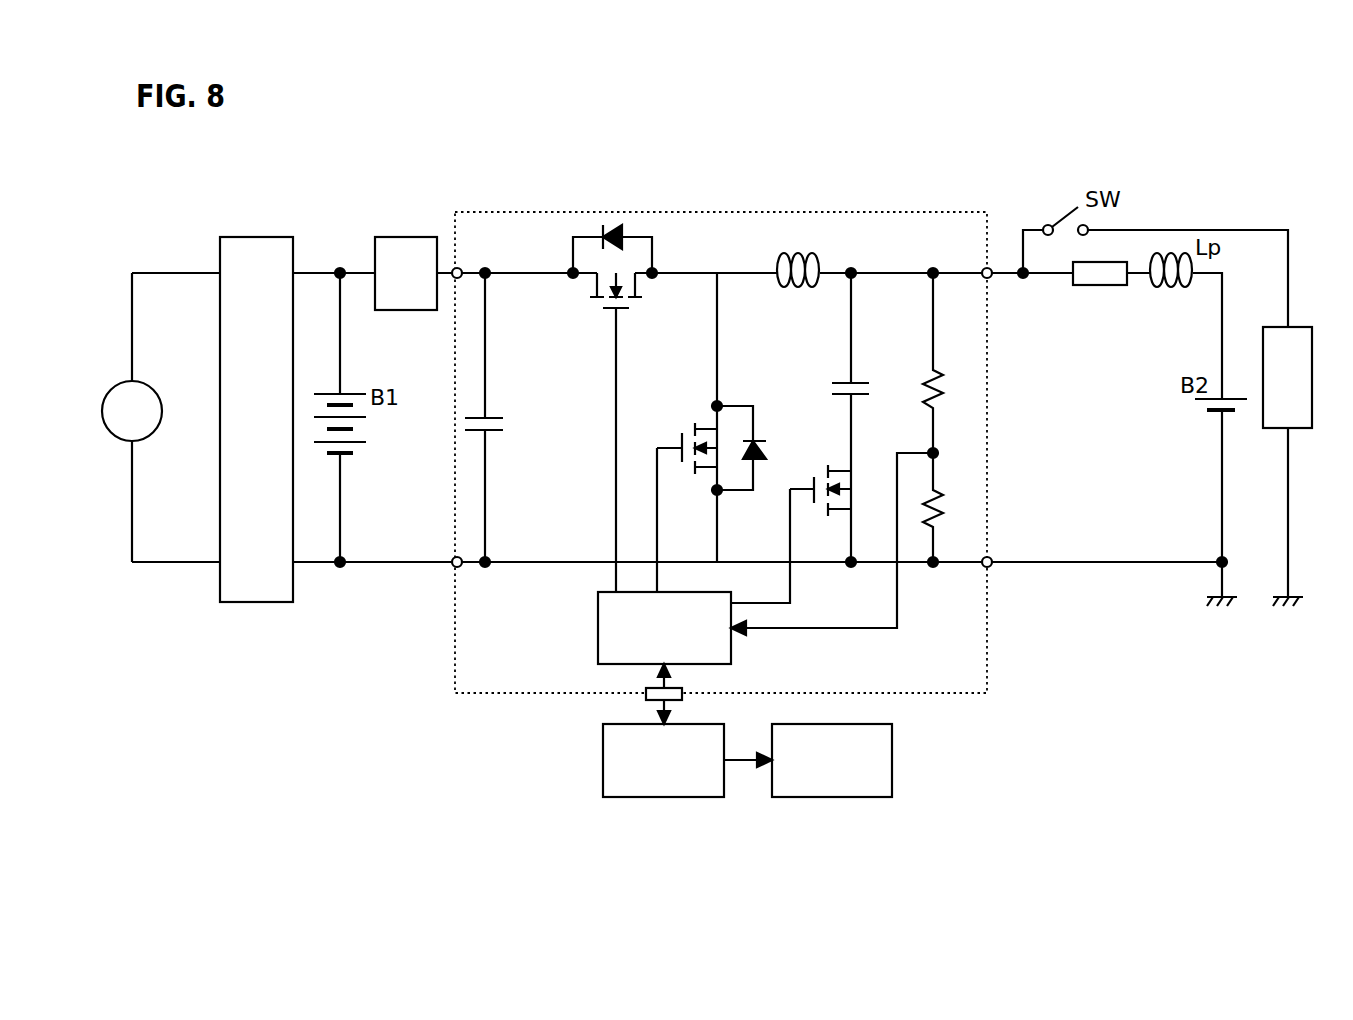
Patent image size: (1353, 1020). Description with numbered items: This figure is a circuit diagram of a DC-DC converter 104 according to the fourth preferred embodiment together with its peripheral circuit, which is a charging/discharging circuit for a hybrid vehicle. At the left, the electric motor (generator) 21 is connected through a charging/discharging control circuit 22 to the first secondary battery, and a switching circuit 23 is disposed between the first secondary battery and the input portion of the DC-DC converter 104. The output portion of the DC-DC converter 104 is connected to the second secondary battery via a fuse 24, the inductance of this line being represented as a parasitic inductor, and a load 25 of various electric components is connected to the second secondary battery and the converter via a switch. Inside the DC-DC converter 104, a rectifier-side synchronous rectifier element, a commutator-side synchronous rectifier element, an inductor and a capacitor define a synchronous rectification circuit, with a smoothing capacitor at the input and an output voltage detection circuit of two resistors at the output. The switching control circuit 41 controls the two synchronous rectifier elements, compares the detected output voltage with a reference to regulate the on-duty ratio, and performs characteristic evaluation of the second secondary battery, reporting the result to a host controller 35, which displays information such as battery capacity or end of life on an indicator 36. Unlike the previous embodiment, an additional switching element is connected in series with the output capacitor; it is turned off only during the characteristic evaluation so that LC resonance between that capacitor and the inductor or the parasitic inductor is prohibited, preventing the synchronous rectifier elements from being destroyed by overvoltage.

The electric motor (generator) 21 is at (102, 401).
The charging/discharging control circuit 22 is at (286, 234).
The switching circuit 23 is at (423, 237).
The fuse 24 is at (1090, 285).
The load 25 is at (1275, 428).
The host controller 35 is at (603, 747).
The indicator 36 is at (892, 738).
The switching control circuit 41 is at (597, 642).
The DC-DC converter 104 is at (742, 444).